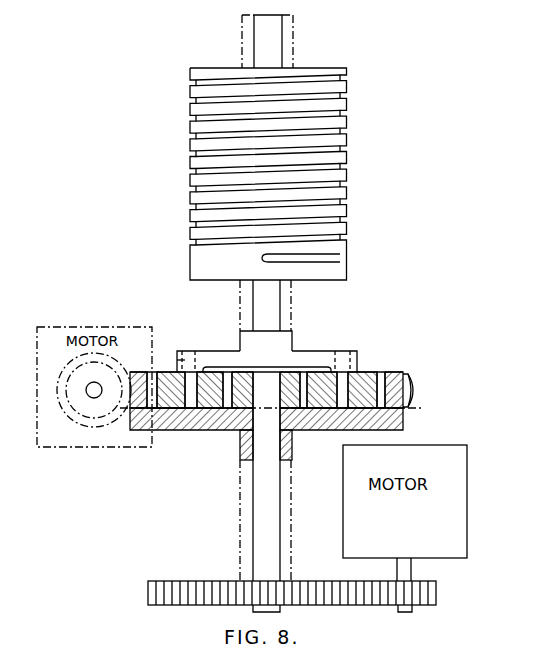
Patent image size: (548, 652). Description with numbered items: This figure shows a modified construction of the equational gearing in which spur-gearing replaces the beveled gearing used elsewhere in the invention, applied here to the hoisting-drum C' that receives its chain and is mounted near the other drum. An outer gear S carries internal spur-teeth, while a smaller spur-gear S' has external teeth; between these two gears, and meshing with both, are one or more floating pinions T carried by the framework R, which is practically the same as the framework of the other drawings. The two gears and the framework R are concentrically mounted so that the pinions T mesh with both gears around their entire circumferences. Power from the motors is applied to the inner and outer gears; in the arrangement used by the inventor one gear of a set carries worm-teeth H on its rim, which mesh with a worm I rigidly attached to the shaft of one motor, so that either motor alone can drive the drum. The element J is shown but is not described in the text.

The hoisting-drum C' is at (279, 174).
The smaller spur-gear with external teeth S' is at (267, 351).
The framework R is at (267, 362).
The jaw J is at (169, 365).
The pinions T is at (367, 370).
The gear with internal spur-teeth S is at (271, 380).
The worm-teeth H is at (415, 390).
The worm I is at (90, 397).